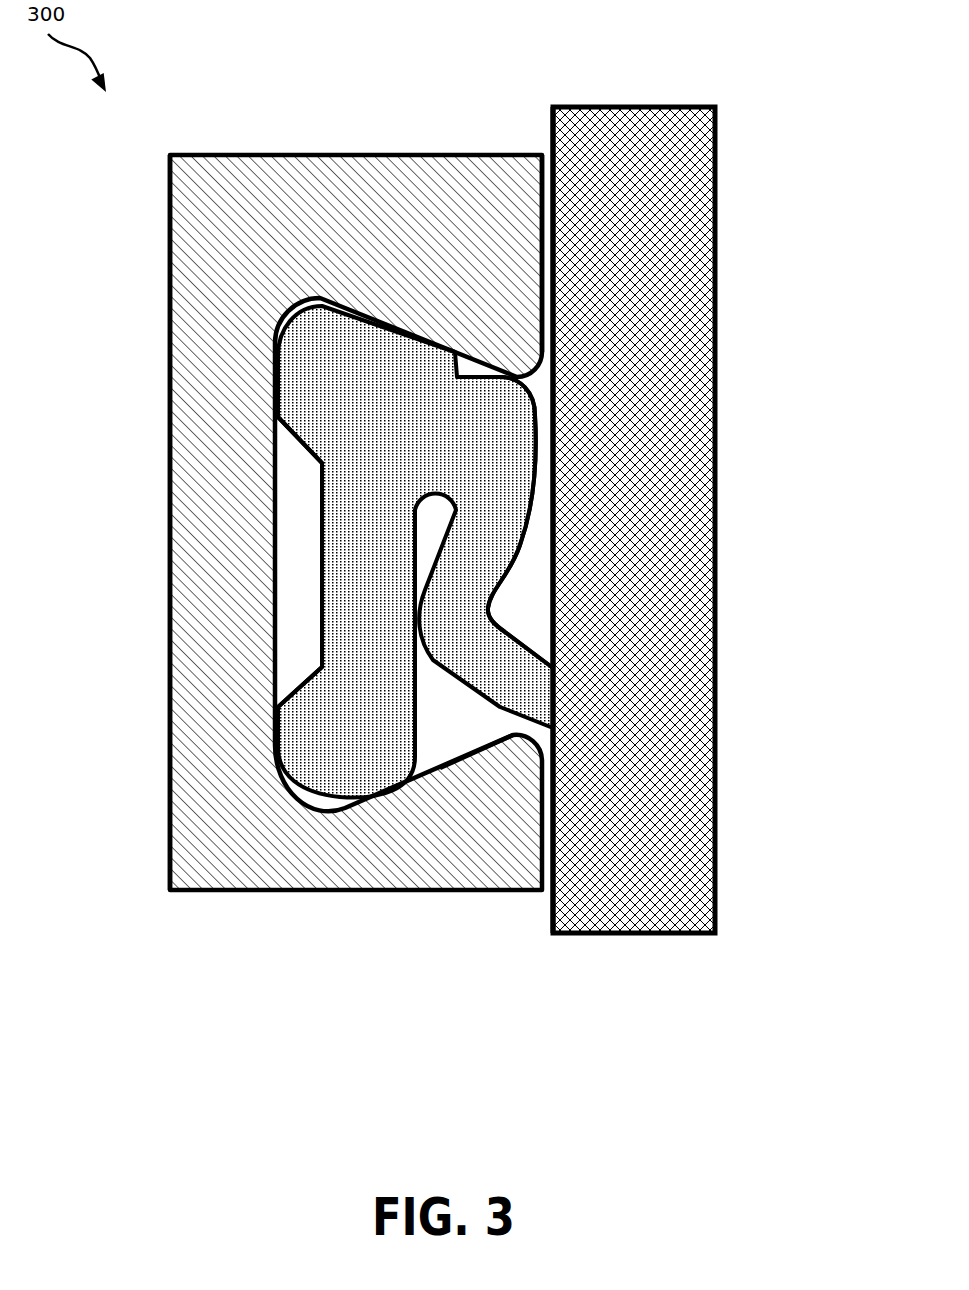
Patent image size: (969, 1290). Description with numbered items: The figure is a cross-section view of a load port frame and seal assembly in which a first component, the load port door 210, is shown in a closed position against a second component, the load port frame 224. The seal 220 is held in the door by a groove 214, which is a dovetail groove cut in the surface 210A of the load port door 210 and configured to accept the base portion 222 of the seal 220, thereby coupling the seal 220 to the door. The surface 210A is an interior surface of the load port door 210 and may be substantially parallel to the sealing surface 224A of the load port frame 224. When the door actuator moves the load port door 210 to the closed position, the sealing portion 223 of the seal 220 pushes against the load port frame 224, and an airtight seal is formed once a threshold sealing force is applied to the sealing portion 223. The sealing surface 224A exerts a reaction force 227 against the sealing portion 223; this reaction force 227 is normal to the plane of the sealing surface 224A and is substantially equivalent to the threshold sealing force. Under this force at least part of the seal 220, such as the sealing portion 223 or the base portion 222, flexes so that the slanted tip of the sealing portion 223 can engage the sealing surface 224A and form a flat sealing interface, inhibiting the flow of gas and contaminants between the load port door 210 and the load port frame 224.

The load port door 210 is at (298, 155).
The surface of load port door 210A is at (542, 188).
The groove 214 is at (226, 458).
The seal 220 is at (465, 552).
The base portion 222 is at (304, 609).
The sealing portion 223 is at (532, 556).
The load port frame 224 is at (715, 241).
The sealing surface 224A is at (465, 703).
The reaction force 227 is at (482, 707).